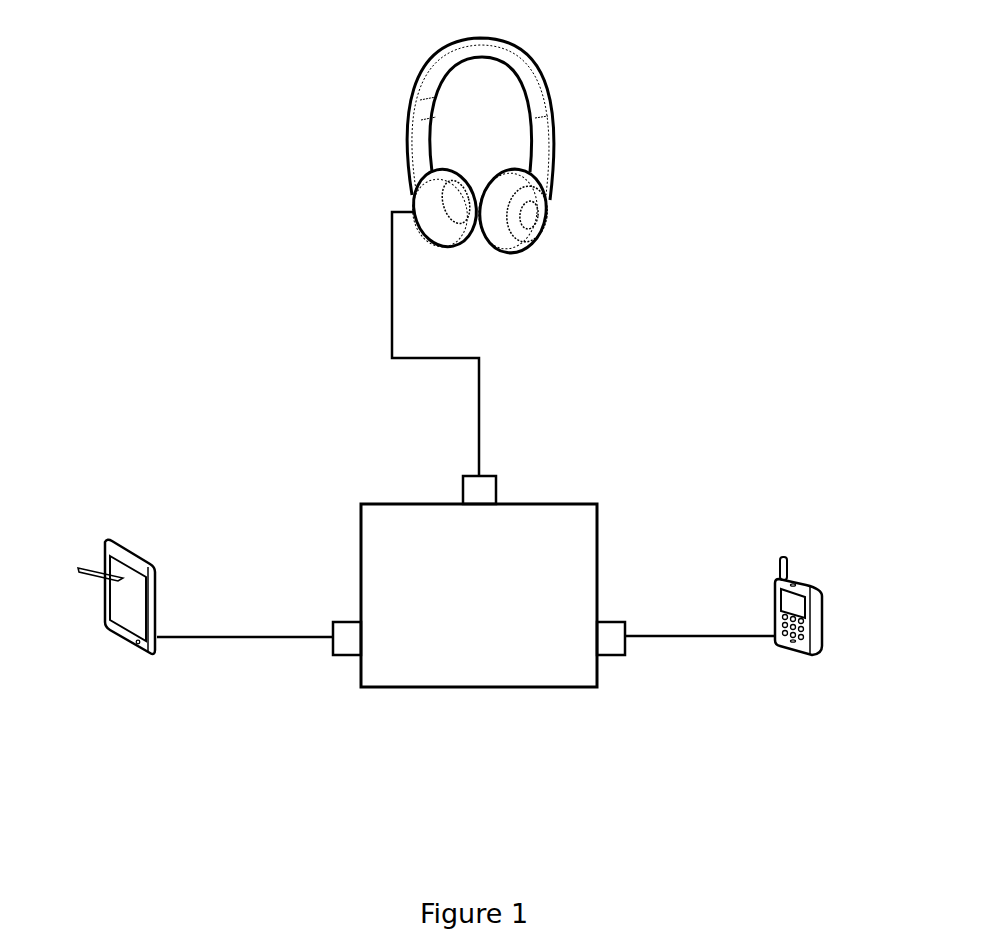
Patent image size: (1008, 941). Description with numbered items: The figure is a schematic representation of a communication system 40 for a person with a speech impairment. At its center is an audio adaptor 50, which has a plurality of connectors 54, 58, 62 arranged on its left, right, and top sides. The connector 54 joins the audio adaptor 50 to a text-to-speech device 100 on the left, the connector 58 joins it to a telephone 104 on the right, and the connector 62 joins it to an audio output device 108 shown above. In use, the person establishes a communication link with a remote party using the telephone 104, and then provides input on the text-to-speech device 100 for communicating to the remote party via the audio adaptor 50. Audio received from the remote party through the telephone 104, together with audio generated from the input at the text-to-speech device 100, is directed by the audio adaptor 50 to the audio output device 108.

The communication system 40 is at (236, 207).
The audio adaptor 50 is at (479, 595).
The connector 54 is at (338, 656).
The connector 58 is at (620, 657).
The connector 62 is at (497, 476).
The text-to-speech device 100 is at (92, 527).
The telephone 104 is at (816, 549).
The audio output device 108 is at (569, 74).